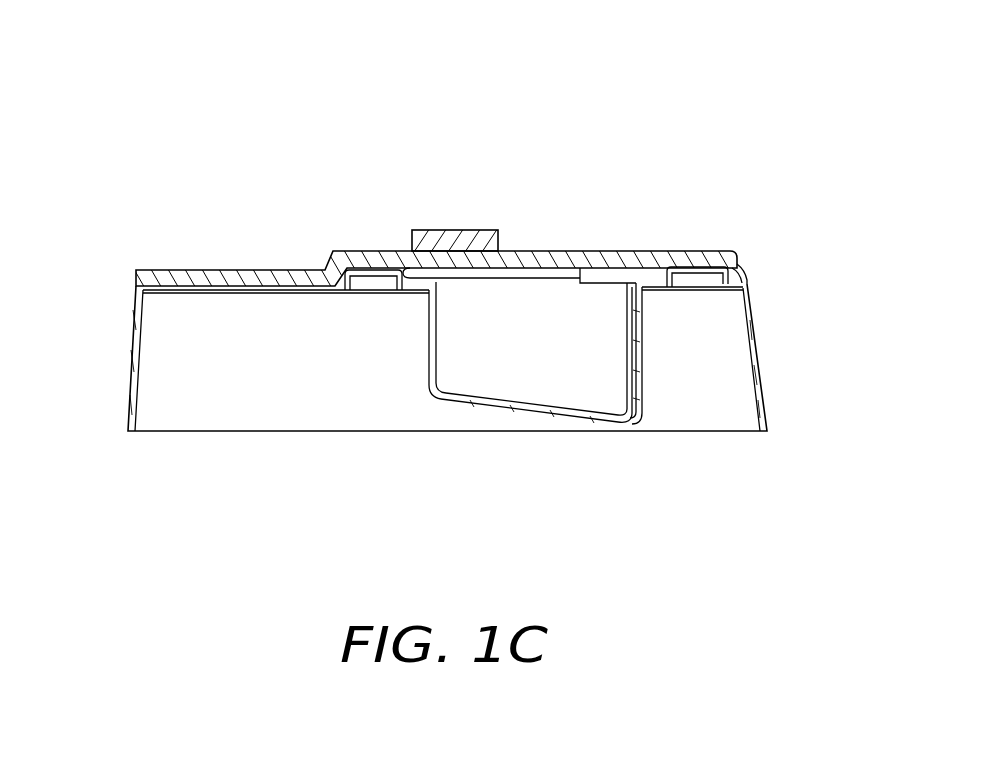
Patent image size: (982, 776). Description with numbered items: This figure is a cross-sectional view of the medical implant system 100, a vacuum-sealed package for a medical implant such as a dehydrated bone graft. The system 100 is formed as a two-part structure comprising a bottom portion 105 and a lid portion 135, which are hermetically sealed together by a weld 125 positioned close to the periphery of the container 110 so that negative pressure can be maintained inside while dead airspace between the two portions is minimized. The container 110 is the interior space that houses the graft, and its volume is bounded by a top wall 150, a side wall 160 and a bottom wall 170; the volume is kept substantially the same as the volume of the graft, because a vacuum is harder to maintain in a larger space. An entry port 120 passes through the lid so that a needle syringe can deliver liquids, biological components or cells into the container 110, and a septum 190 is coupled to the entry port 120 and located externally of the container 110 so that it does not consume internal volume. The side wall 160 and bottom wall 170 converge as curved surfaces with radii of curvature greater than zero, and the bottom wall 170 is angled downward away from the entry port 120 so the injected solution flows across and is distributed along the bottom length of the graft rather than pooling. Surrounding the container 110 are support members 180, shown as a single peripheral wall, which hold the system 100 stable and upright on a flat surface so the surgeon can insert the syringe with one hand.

The medical implant system 100 is at (164, 158).
The entry port 120 is at (437, 219).
The septum 190 is at (467, 230).
The top wall 150 is at (586, 269).
The weld 125 is at (698, 269).
The lid portion 135 is at (752, 277).
The support members 180 is at (133, 358).
The bottom portion 105 is at (770, 287).
The container 110 is at (558, 370).
The bottom wall 170 is at (490, 407).
The side wall 160 is at (643, 377).